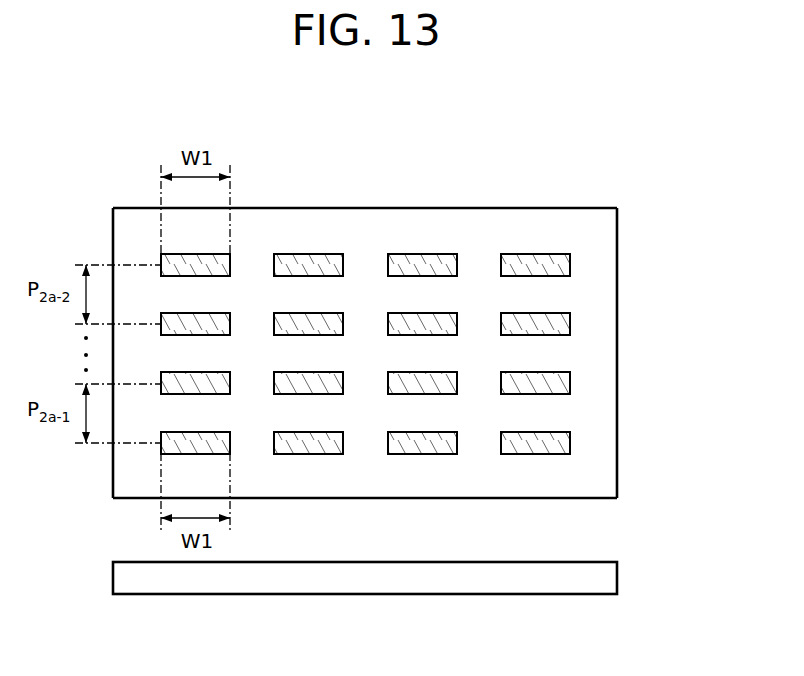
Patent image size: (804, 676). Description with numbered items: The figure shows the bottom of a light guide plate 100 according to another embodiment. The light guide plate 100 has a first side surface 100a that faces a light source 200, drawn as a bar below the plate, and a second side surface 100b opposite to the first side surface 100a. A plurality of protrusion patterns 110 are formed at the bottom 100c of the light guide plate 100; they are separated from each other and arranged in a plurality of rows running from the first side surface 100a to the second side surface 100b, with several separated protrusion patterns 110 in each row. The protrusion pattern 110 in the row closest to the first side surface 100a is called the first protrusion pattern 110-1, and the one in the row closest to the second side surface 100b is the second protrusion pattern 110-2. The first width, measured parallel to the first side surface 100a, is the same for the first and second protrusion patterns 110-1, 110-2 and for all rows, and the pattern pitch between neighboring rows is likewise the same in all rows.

The light guide plate 100 is at (450, 203).
The first side surface 100a is at (585, 498).
The second side surface 100b is at (598, 208).
The bottom 100c is at (364, 232).
The protrusion patterns 110 is at (478, 358).
The first protrusion pattern 110-1 is at (439, 447).
The second protrusion pattern 110-2 is at (570, 262).
The light source 200 is at (617, 577).